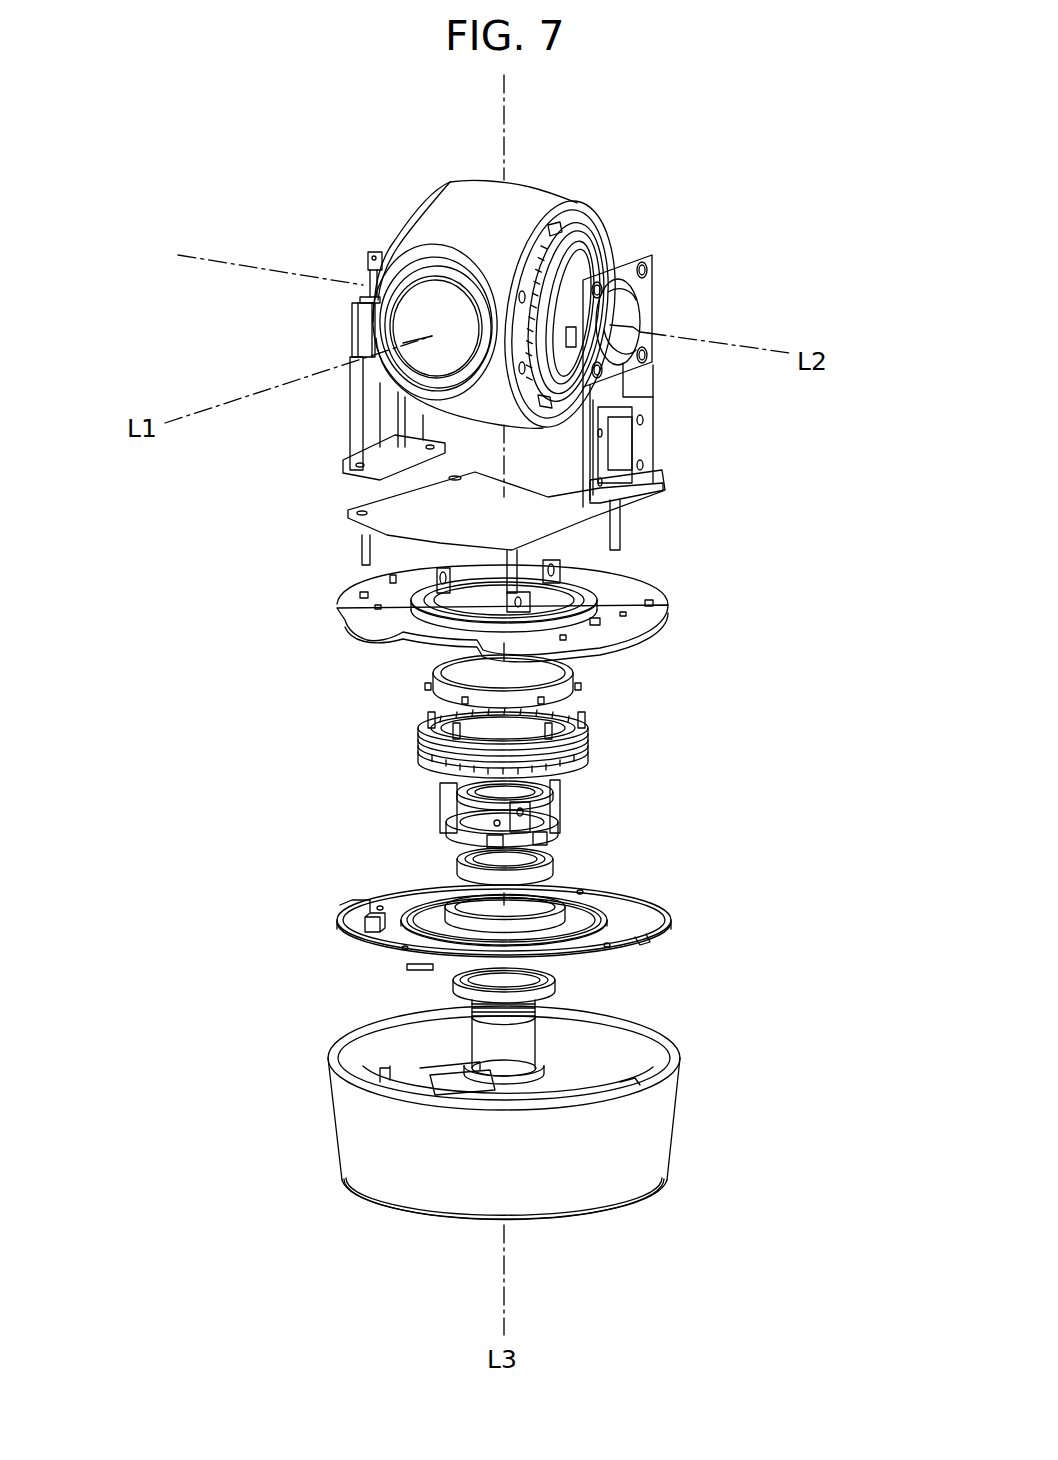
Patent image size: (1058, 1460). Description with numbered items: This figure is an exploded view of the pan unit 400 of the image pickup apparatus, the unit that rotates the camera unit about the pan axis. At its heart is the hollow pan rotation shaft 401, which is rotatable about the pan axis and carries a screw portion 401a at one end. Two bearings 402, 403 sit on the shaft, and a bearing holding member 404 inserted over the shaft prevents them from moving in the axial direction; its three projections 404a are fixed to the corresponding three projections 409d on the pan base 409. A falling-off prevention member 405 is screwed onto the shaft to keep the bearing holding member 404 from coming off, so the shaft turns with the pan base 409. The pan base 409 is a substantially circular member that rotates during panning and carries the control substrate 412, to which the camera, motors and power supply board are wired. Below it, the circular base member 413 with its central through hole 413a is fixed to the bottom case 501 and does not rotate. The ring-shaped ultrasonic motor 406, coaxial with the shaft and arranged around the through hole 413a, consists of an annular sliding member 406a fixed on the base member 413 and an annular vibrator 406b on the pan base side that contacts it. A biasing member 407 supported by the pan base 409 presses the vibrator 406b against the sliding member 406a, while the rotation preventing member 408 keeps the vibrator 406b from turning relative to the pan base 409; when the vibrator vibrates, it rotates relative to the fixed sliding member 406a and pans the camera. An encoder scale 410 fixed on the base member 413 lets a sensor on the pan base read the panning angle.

The pan unit 400 is at (248, 650).
The pan rotation shaft 401 is at (533, 1037).
The screw portion 401a is at (555, 1005).
The bearing 402 is at (462, 992).
The bearing 403 is at (455, 872).
The bearing holding member 404 is at (440, 826).
The projections 404a is at (575, 775).
The falling-off prevention member 405 is at (440, 795).
The ultrasonic motor 406 is at (745, 695).
The sliding member 406a is at (590, 760).
The vibrator 406b is at (585, 730).
The biasing member 407 is at (595, 692).
The rotation preventing member 408 is at (430, 693).
The pan base 409 is at (340, 602).
The projections 409d is at (620, 585).
The scale 410 is at (630, 945).
The control substrate 412 is at (378, 513).
The base member 413 is at (645, 918).
The through hole 413a is at (555, 892).
The bottom case 501 is at (390, 1182).